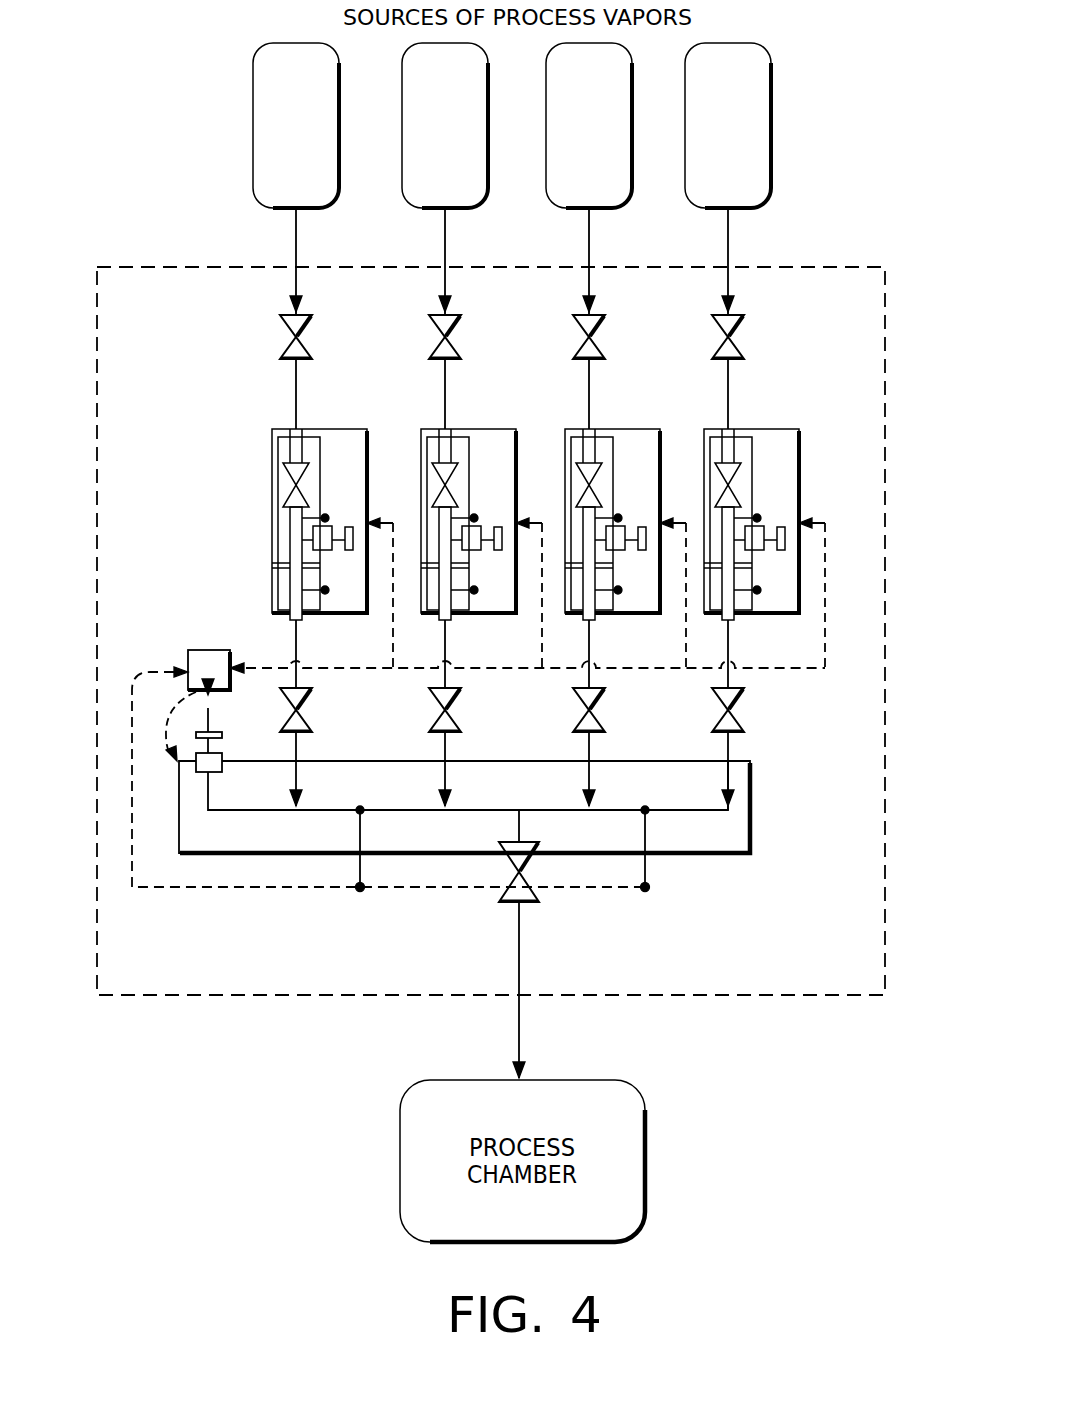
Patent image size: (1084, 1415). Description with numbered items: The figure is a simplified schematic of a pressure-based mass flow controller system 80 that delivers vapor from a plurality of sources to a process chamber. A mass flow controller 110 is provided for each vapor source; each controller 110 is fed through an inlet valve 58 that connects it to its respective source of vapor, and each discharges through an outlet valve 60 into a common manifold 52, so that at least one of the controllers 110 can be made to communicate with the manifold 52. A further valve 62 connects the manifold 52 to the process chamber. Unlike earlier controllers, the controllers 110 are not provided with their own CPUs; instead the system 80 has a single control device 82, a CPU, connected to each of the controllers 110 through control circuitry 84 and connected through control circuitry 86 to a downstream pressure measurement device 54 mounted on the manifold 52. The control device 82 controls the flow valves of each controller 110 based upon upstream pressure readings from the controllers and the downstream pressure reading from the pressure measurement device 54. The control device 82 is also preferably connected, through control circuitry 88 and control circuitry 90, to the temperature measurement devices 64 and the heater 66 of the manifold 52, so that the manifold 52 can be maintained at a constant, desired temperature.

The manifold 52 is at (698, 824).
The downstream pressure measurement device 54 is at (224, 773).
The inlet valves 58 is at (308, 332).
The outlet valves 60 is at (308, 712).
The valve 62 is at (538, 896).
The temperature measurement devices 64 is at (363, 868).
The heater 66 is at (751, 803).
The mass flow controller system 80 is at (893, 342).
The control device 82 is at (206, 650).
The control circuitry 84 is at (826, 670).
The control circuitry 86 is at (212, 712).
The control circuitry 88 is at (229, 890).
The control circuitry 90 is at (167, 725).
The mass flow controller 110 is at (272, 434).